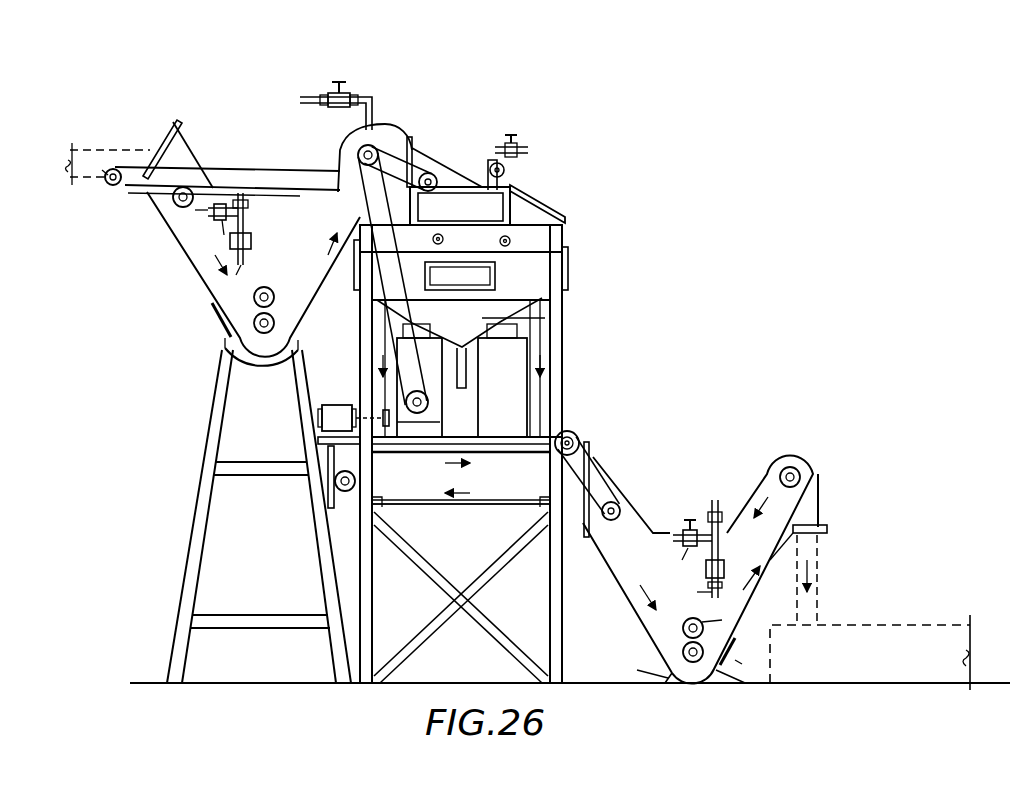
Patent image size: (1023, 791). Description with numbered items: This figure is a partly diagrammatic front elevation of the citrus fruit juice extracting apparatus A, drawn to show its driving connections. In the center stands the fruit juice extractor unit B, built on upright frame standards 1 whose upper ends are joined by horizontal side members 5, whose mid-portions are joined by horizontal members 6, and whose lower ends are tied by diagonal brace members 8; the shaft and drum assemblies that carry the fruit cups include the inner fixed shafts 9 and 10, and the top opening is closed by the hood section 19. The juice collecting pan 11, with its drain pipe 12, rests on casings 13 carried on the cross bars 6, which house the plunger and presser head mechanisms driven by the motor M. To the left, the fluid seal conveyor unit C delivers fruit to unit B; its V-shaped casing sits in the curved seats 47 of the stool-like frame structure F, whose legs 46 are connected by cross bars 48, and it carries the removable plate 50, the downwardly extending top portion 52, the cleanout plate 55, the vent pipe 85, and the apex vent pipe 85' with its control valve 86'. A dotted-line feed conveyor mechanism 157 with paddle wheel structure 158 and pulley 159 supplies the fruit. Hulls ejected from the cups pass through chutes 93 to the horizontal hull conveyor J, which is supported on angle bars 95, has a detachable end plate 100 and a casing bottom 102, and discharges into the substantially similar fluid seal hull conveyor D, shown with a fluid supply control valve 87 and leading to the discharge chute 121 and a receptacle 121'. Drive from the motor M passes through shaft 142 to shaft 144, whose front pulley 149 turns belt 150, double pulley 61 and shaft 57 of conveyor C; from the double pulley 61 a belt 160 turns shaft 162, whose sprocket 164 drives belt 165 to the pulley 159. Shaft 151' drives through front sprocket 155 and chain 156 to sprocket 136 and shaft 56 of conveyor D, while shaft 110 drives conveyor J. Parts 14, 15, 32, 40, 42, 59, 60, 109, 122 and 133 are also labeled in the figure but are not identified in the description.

The citrus fruit juice extracting apparatus A is at (563, 362).
The upright frame standards 1 is at (565, 385).
The horizontal side members 5 is at (552, 238).
The horizontal members 6 is at (514, 445).
The diagonal brace members 8 is at (486, 585).
The inner fixed shaft 9 is at (445, 240).
The inner fixed shaft 10 is at (499, 241).
The juice collecting pan 11 is at (510, 330).
The drain pipe 12 is at (468, 375).
The casings 13 is at (429, 375).
The top box 14 is at (522, 217).
The inclined cover plate 15 is at (562, 213).
The hood section 19 is at (455, 165).
The side tab 32 is at (570, 257).
The gauge pipe 40 is at (522, 152).
The valve 42 is at (520, 142).
The legs 46 is at (190, 553).
The curved seats 47 is at (259, 364).
The cross bars 48 is at (258, 476).
The removable plate 50 is at (165, 125).
The top portion of casing 52 is at (196, 150).
The cleanout door or plate 55 is at (218, 322).
The shaft 56 is at (612, 521).
The shaft 57 is at (358, 156).
The roller 59 is at (268, 288).
The roller 60 is at (178, 204).
The double pulley 61 is at (373, 145).
The vent pipe 85 is at (226, 201).
The vent pipe 85' is at (361, 100).
The control valve 86' is at (356, 72).
The water or fluid supply control valve 87 is at (698, 522).
The chutes 93 is at (383, 333).
The angle bars 95 is at (548, 505).
The detachable end plate 100 is at (326, 458).
The bottom of casing 102 is at (495, 492).
The roller 109 is at (345, 492).
The shaft 110 is at (586, 538).
The discharge chute 121 is at (838, 580).
The receptacle 121' is at (870, 641).
The chute 122 is at (645, 528).
The discharge plate 133 is at (828, 532).
The sprocket 136 is at (640, 510).
The shaft 142 is at (385, 409).
The shaft 144 is at (414, 412).
The front pulley 149 is at (428, 408).
The belt 150 is at (366, 202).
The shaft 151' is at (597, 468).
The front sprocket 155 is at (577, 438).
The chain 156 is at (604, 483).
The conveyor mechanism 157 is at (68, 162).
The paddle wheel structure 158 is at (106, 186).
The pulley 159 is at (113, 187).
The belt or chain 160 is at (392, 140).
The shaft 162 is at (460, 207).
The sprocket 164 is at (429, 172).
The belt 165 is at (296, 165).
The fruit juice extractor unit B is at (461, 299).
The fluid seal conveyor unit C is at (192, 240).
The fluid seal hull conveyor D is at (640, 606).
The stool-like frame structure F is at (200, 492).
The horizontal hull conveyor J is at (422, 500).
The motor M is at (333, 410).